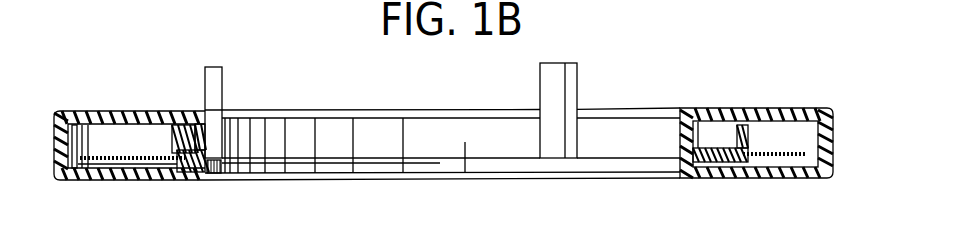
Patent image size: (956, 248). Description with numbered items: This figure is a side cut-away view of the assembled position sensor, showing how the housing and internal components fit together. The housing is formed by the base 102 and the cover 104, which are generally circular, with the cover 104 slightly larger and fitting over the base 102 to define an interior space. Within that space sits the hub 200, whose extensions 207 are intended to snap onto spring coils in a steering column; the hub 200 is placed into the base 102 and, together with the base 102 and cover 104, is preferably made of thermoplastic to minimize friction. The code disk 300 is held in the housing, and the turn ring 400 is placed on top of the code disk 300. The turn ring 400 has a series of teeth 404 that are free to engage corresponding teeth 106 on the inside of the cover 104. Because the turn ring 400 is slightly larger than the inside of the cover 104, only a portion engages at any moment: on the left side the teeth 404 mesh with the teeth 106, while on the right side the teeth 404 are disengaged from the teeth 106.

The base 102 is at (68, 178).
The cover 104 is at (93, 112).
The teeth 106 is at (705, 125).
The hub 200 is at (187, 176).
The extensions 207 is at (540, 85).
The code disk 300 is at (123, 181).
The turn ring 400 is at (172, 143).
The teeth 404 is at (720, 160).